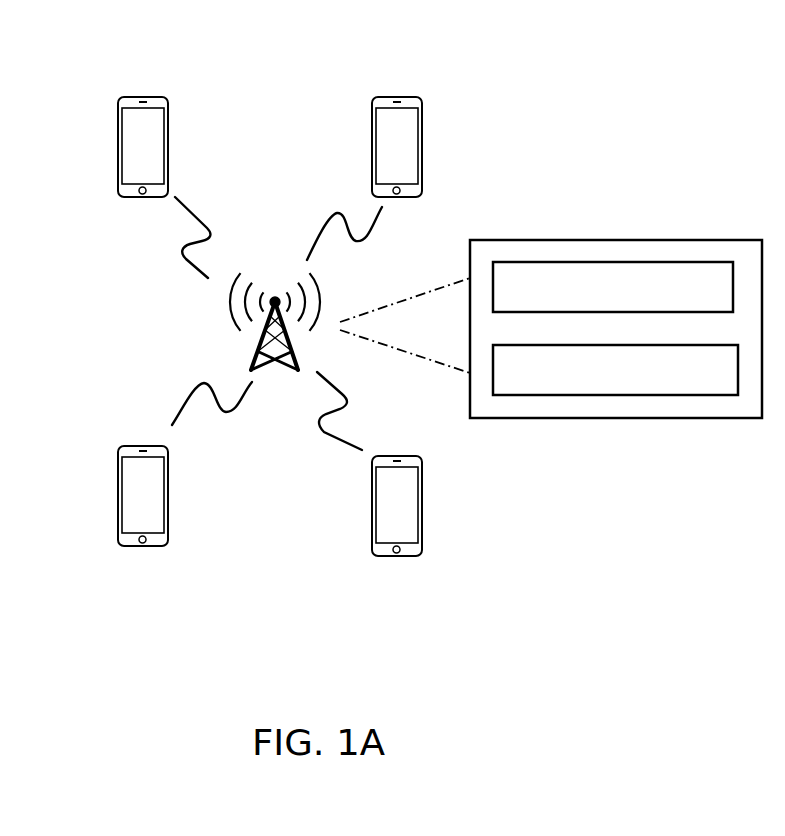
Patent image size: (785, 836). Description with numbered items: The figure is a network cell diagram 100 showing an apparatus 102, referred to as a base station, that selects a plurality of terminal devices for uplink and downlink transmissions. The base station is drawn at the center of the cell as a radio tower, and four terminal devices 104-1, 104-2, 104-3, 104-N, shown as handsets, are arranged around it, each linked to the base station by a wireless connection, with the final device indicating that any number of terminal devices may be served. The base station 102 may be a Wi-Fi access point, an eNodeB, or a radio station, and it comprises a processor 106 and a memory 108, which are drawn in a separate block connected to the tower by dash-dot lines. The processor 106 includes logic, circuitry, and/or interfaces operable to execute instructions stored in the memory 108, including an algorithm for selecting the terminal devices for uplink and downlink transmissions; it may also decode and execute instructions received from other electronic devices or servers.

The network cell diagram 100 is at (634, 164).
The apparatus 102 is at (253, 358).
The terminal device 104-1 is at (118, 112).
The terminal device 104-2 is at (422, 113).
The terminal device 104-3 is at (118, 517).
The terminal device 104-N is at (423, 517).
The processor 106 is at (613, 287).
The memory 108 is at (615, 370).